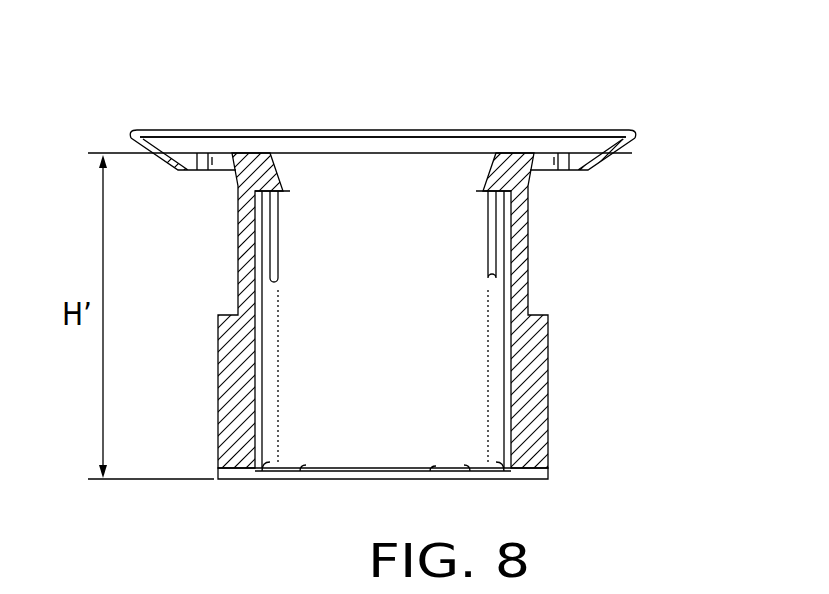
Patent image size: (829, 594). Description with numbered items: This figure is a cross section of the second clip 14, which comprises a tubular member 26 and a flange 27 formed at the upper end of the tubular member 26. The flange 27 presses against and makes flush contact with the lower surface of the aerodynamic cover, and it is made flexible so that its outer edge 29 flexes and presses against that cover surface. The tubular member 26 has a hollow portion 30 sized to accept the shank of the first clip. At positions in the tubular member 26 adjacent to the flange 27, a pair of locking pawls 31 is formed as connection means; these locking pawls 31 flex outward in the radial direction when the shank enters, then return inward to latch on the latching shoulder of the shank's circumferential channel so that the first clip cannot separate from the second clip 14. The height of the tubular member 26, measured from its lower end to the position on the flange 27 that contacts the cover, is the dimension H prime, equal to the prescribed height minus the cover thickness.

The second clip 14 is at (578, 112).
The flange 27 is at (214, 122).
The outer edge 29 is at (632, 139).
The tubular member 26 is at (560, 367).
The locking pawls 31 is at (478, 193).
The hollow portion 30 is at (405, 306).